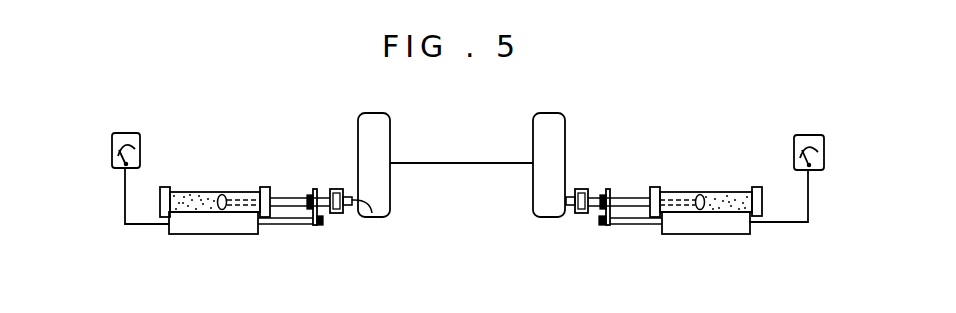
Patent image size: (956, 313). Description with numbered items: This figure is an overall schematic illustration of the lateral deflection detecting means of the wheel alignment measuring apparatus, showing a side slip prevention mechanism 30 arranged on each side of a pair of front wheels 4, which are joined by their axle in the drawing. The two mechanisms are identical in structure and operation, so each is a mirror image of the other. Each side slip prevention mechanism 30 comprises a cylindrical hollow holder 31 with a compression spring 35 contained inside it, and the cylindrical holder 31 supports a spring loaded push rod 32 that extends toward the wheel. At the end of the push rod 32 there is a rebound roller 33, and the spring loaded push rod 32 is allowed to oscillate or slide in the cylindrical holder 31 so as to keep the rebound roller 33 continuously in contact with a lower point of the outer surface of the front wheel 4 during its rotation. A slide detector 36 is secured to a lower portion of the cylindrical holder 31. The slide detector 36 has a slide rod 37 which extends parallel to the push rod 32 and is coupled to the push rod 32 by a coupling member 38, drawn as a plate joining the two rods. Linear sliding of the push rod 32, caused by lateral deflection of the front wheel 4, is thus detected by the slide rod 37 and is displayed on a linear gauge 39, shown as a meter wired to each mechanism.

The front wheel 4 is at (368, 136).
The side slip prevention mechanism 30 is at (228, 182).
The cylindrical hollow holder 31 is at (163, 187).
The push rod 32 is at (293, 192).
The rebound roller 33 is at (374, 217).
The compression spring 35 is at (195, 191).
The slide detector 36 is at (231, 236).
The slide rod 37 is at (283, 226).
The coupling member 38 is at (312, 230).
The linear gauge 39 is at (112, 150).